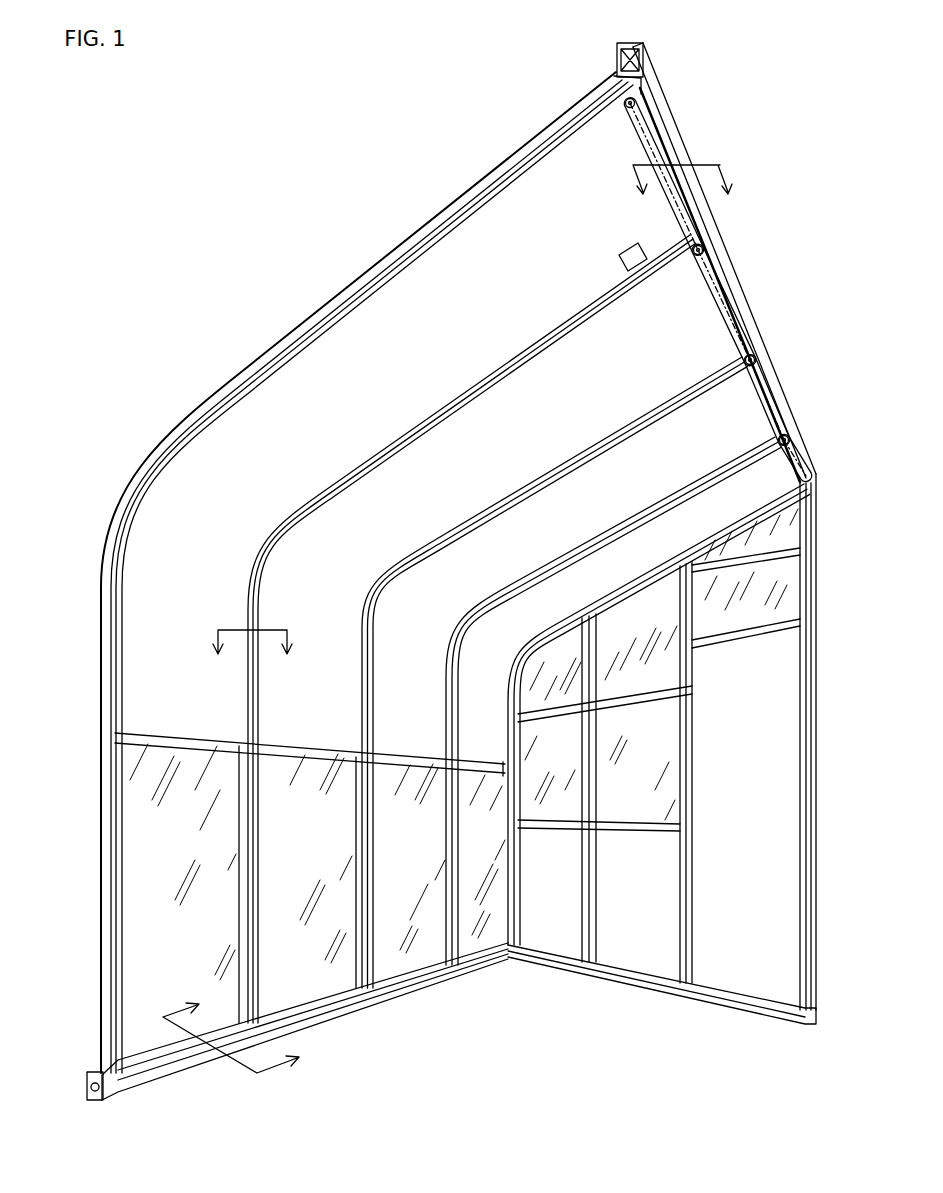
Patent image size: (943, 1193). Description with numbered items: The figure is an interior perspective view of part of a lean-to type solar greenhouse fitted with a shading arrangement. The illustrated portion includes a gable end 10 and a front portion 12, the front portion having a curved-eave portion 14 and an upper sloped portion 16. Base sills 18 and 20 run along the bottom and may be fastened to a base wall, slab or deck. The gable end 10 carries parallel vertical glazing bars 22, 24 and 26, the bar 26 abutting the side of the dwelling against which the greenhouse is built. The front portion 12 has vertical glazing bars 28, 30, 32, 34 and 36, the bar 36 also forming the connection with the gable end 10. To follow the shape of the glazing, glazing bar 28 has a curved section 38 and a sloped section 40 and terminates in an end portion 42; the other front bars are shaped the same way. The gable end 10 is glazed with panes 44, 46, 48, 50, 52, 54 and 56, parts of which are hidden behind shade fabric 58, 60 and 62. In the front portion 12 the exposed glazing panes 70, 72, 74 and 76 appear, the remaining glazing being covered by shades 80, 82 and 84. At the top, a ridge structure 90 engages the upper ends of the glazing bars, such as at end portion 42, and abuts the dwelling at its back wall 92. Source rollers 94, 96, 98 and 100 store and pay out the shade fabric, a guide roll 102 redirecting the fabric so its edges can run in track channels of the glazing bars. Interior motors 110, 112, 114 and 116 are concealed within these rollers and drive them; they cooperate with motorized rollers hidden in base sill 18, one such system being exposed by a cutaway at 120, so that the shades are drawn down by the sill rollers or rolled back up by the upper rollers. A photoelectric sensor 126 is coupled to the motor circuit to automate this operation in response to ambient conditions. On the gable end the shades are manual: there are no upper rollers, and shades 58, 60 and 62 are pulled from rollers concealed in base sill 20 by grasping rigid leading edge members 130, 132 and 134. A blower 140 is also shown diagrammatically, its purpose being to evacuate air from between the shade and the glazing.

The gable end 10 is at (451, 574).
The front portion 12 is at (279, 935).
The curved-eave portion 14 is at (471, 572).
The upper sloped portion 16 is at (544, 562).
The base sill 18 is at (313, 1022).
The base sill 20 is at (742, 1003).
The vertical glazing bar 22 is at (581, 898).
The vertical glazing bar 24 is at (679, 918).
The vertical glazing bar 26 is at (811, 742).
The vertical glazing bar 28 is at (120, 823).
The vertical glazing bar 30 is at (259, 823).
The vertical glazing bar 32 is at (374, 823).
The vertical glazing bar 34 is at (507, 832).
The vertical glazing bar 36 is at (513, 777).
The curved section 38 is at (367, 572).
The sloped section 40 is at (360, 277).
The end portion 42 is at (612, 82).
The glazing pane 44 is at (516, 686).
The glazing pane 46 is at (642, 714).
The glazing pane 48 is at (642, 714).
The glazing pane 50 is at (630, 610).
The glazing pane 52 is at (672, 743).
The glazing pane 54 is at (827, 742).
The glazing pane 56 is at (812, 514).
The shade fabric 58 is at (560, 927).
The shade fabric 60 is at (660, 848).
The shade fabric 62 is at (824, 742).
The glazing pane 70 is at (180, 940).
The glazing pane 72 is at (323, 980).
The glazing pane 74 is at (403, 953).
The glazing pane 76 is at (467, 932).
The shade 80 is at (333, 350).
The shade 82 is at (697, 323).
The shade 84 is at (727, 427).
The ridge structure 90 is at (685, 250).
The back wall 92 is at (655, 88).
The source roller 94 is at (650, 115).
The source roller 96 is at (715, 262).
The source roller 98 is at (760, 372).
The source roller 100 is at (795, 476).
The guide roll 102 is at (615, 80).
The interior motor 110 is at (622, 102).
The interior motor 112 is at (706, 250).
The interior motor 114 is at (758, 360).
The interior motor 116 is at (792, 441).
The motorized system 120 is at (90, 1098).
The photoelectric sensor 126 is at (628, 247).
The rigid leading edge member 130 is at (560, 817).
The rigid leading edge member 132 is at (640, 817).
The rigid leading edge member 134 is at (757, 627).
The blower 140 is at (646, 46).